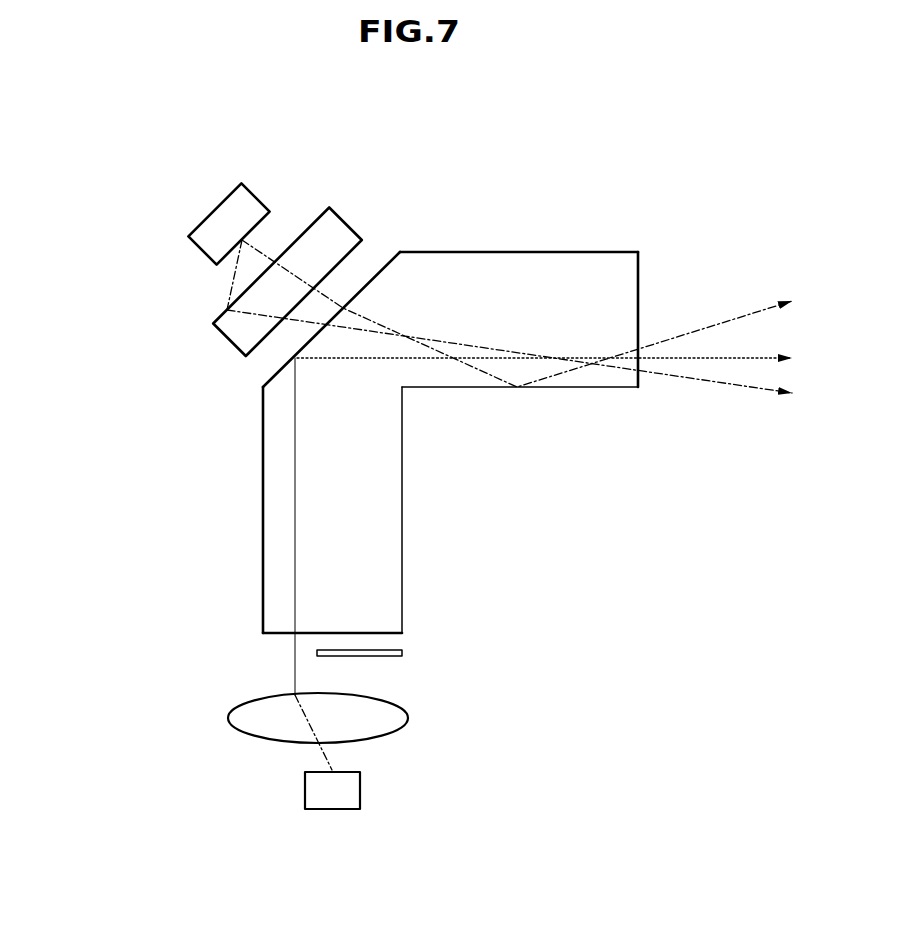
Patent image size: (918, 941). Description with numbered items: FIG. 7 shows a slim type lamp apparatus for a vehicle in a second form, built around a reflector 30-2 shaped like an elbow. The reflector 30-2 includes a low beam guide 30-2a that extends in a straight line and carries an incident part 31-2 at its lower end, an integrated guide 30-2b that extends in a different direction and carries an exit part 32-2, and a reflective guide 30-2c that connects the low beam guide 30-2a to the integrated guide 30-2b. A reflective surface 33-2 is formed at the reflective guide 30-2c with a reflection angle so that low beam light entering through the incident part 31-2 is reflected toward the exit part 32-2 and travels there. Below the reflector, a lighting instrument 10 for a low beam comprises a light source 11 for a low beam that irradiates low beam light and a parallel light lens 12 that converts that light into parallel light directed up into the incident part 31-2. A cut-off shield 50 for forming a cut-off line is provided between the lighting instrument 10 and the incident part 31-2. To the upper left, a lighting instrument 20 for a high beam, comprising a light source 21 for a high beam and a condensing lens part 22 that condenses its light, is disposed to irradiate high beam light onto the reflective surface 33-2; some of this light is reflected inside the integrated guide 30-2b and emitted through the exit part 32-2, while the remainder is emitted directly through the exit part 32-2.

The lighting instrument for a low beam 10 is at (497, 800).
The light source for a low beam 11 is at (343, 803).
The parallel light lens 12 is at (393, 727).
The lighting instrument for a high beam 20 is at (103, 173).
The light source for a high beam 21 is at (218, 210).
The condensing lens part 22 is at (222, 319).
The reflector 30-2 is at (228, 515).
The low beam guide 30-2a is at (373, 490).
The integrated guide 30-2b is at (520, 280).
The reflective guide 30-2c is at (337, 345).
The incident part 31-2 is at (340, 623).
The exit part 32-2 is at (638, 289).
The reflective surface 33-2 is at (377, 278).
The cut-off shield 50 is at (402, 653).